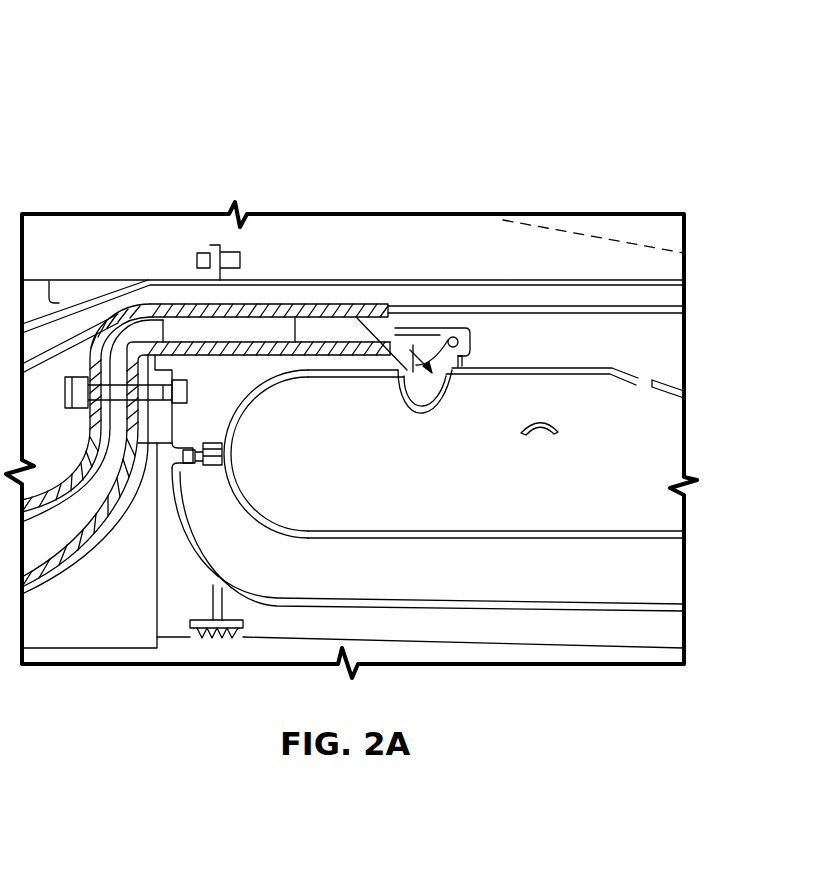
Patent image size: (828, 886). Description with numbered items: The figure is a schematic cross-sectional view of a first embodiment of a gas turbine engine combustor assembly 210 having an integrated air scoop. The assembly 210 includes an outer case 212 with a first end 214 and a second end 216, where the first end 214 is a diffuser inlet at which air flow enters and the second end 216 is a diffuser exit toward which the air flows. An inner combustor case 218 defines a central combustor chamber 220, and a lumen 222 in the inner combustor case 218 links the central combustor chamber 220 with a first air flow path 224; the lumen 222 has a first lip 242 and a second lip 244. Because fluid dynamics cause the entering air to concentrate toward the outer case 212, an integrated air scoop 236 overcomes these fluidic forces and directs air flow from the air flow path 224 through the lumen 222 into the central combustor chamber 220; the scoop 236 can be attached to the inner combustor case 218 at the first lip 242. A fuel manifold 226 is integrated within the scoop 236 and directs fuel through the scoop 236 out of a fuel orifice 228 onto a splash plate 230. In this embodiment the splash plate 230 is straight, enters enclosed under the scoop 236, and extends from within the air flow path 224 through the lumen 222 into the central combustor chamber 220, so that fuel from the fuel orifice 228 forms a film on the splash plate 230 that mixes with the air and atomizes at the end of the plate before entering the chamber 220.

The gas turbine engine combustor assembly 210 is at (128, 58).
The outer case 212 is at (252, 386).
The first end 214 is at (143, 308).
The second end 216 is at (370, 313).
The inner combustor case 218 is at (185, 330).
The central combustor chamber 220 is at (657, 452).
The lumen 222 is at (418, 410).
The first air flow path 224 is at (175, 303).
The fuel manifold 226 is at (460, 327).
The fuel orifice 228 is at (458, 337).
The splash plate 230 is at (413, 348).
The integrated air scoop 236 is at (428, 328).
The first lip 242 is at (452, 374).
The second lip 244 is at (350, 308).